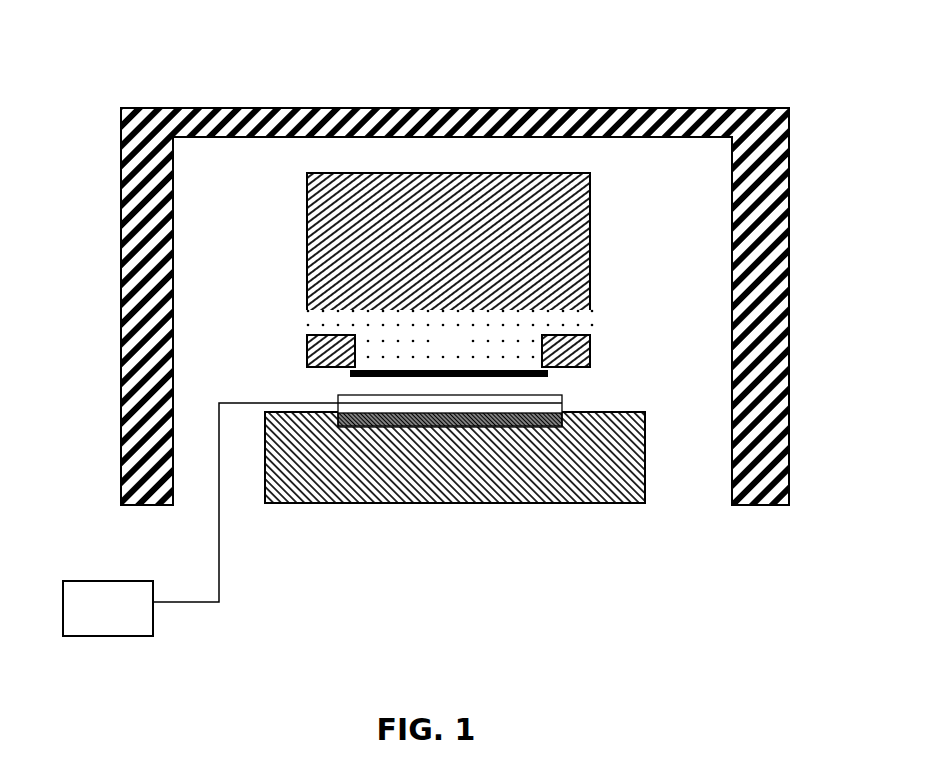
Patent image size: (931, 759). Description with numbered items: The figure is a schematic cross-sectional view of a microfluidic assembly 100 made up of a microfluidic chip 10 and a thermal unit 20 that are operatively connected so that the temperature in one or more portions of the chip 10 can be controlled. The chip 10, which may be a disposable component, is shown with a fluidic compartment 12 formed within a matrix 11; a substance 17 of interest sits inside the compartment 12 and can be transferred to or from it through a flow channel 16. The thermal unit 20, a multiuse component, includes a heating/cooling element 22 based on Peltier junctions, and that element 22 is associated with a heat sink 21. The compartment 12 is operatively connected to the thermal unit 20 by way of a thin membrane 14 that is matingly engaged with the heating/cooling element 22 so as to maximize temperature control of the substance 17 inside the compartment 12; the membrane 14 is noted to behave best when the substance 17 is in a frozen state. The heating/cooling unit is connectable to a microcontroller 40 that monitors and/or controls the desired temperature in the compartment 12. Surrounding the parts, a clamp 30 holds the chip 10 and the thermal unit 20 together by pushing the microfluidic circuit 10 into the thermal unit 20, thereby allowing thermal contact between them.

The microfluidic assembly 100 is at (262, 46).
The clamp 30 is at (451, 107).
The microfluidic chip 10 is at (260, 191).
The matrix 11 is at (590, 268).
The fluidic compartment 12 is at (307, 338).
The flow channel 16 is at (592, 309).
The substance 17 is at (450, 334).
The membrane 14 is at (549, 379).
The thermal unit 20 is at (672, 475).
The heating/cooling element 22 is at (338, 410).
The heat sink 21 is at (265, 458).
The microcontroller 40 is at (108, 638).